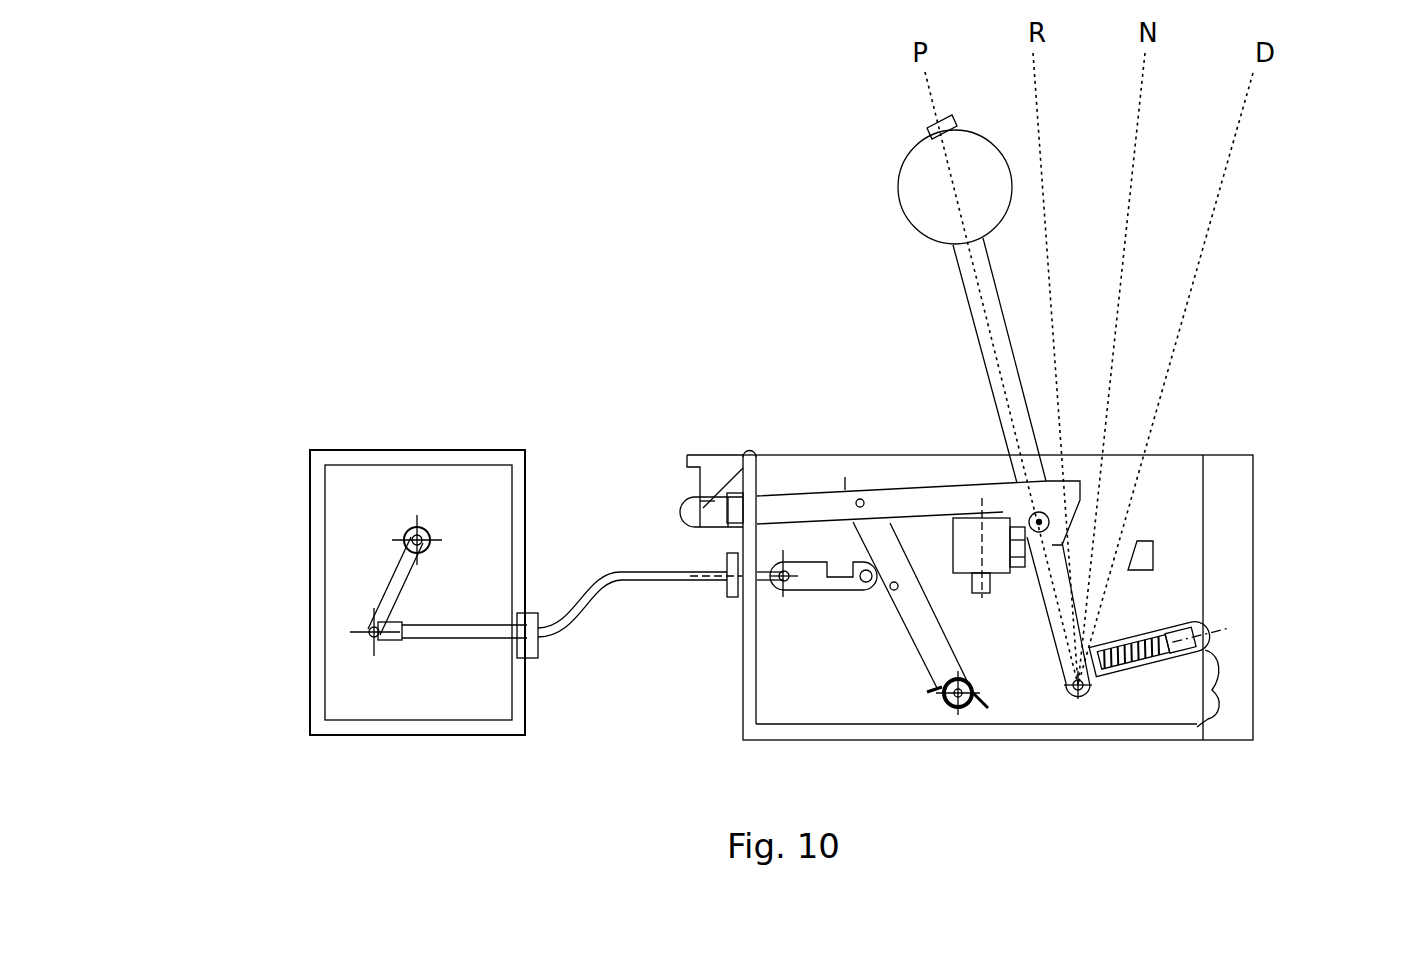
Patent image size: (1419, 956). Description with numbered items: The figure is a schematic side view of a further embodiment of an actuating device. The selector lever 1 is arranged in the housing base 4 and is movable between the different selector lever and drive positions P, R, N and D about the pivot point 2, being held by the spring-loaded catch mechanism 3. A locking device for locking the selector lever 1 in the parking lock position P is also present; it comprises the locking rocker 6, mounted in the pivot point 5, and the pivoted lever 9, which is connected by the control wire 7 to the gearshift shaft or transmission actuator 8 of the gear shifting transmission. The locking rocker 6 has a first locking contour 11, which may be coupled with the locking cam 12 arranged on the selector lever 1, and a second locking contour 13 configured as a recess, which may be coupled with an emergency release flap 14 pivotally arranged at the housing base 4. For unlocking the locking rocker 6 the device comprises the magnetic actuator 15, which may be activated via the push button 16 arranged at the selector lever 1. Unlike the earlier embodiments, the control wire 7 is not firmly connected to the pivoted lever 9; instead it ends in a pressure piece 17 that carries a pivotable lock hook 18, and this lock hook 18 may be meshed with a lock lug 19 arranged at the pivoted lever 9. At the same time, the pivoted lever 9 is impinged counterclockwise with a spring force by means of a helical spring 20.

The selector lever 1 is at (978, 276).
The pivot point 2 is at (1077, 697).
The spring-loaded catch mechanism 3 is at (1148, 677).
The housing base 4 is at (1285, 548).
The pivot point 5 is at (867, 493).
The locking rocker 6 is at (802, 507).
The control wire 7 is at (602, 593).
The transmission actuator 8 is at (262, 540).
The pivoted lever 9 is at (925, 625).
The first locking contour 11 is at (1055, 505).
The locking cam 12 is at (1040, 523).
The second locking contour 13 is at (717, 512).
The emergency release flap 14 is at (718, 475).
The magnetic actuator 15 is at (982, 552).
The push button 16 is at (932, 128).
The pressure piece 17 is at (812, 582).
The lock hook 18 is at (838, 585).
The lock lug 19 is at (887, 592).
The helical spring 20 is at (948, 710).